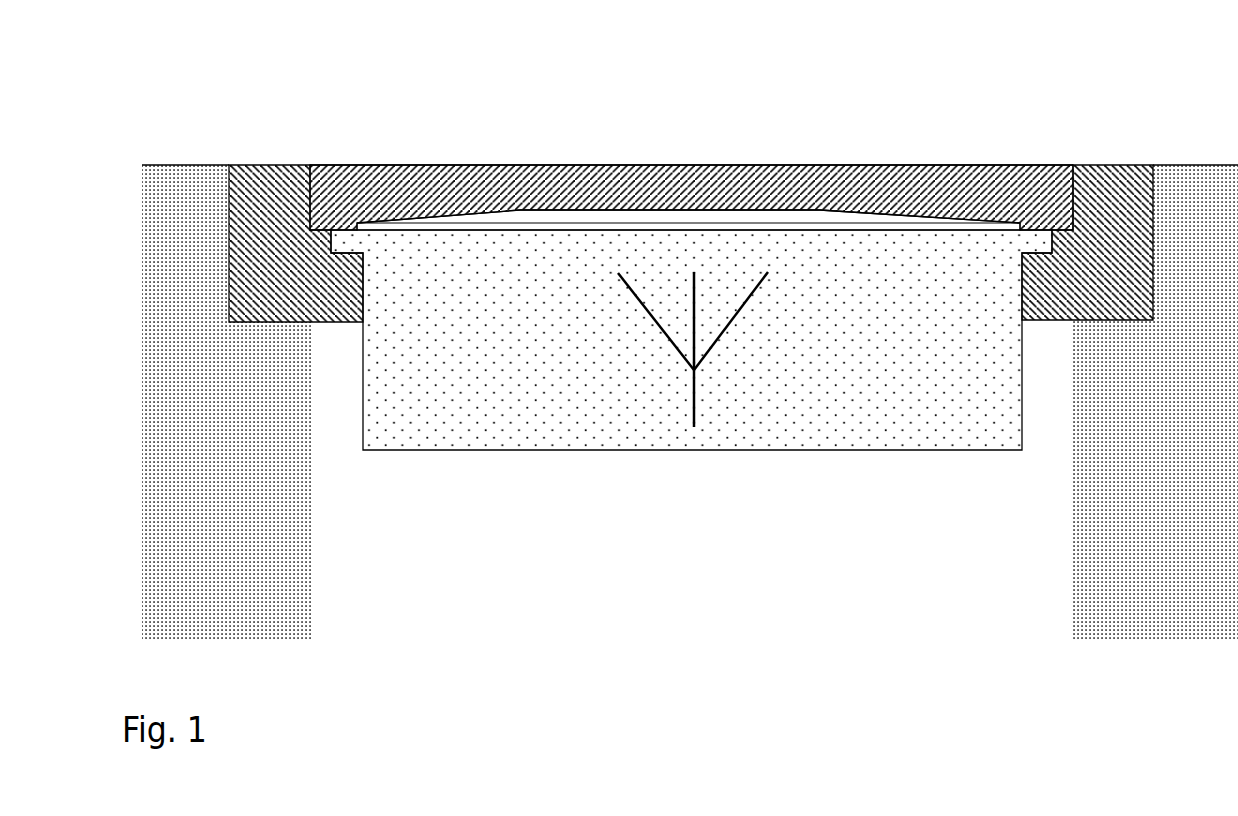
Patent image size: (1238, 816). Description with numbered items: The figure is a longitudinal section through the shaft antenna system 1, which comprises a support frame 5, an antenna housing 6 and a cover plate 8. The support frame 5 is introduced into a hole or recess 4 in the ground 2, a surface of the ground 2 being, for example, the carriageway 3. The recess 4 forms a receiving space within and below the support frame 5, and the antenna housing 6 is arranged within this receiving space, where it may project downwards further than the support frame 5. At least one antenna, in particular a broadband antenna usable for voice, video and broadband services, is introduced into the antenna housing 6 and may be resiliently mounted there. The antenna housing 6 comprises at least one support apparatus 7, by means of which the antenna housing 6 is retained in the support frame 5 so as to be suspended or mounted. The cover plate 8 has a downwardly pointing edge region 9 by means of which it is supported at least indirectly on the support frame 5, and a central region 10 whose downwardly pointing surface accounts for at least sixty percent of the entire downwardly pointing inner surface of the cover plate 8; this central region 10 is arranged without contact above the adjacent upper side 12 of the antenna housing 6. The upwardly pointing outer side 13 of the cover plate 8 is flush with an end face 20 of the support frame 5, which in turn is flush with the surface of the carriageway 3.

The shaft antenna system 1 is at (107, 129).
The ground 2 is at (158, 255).
The carriageway 3 is at (1197, 165).
The recess 4 is at (682, 586).
The support frame 5 is at (268, 182).
The antenna housing 6 is at (470, 432).
The support apparatus 7 is at (347, 250).
The cover plate 8 is at (805, 180).
The edge region 9 is at (342, 230).
The central region 10 is at (667, 213).
The upper side 12 is at (815, 235).
The outer side 13 is at (503, 166).
The end face 20 is at (1113, 165).